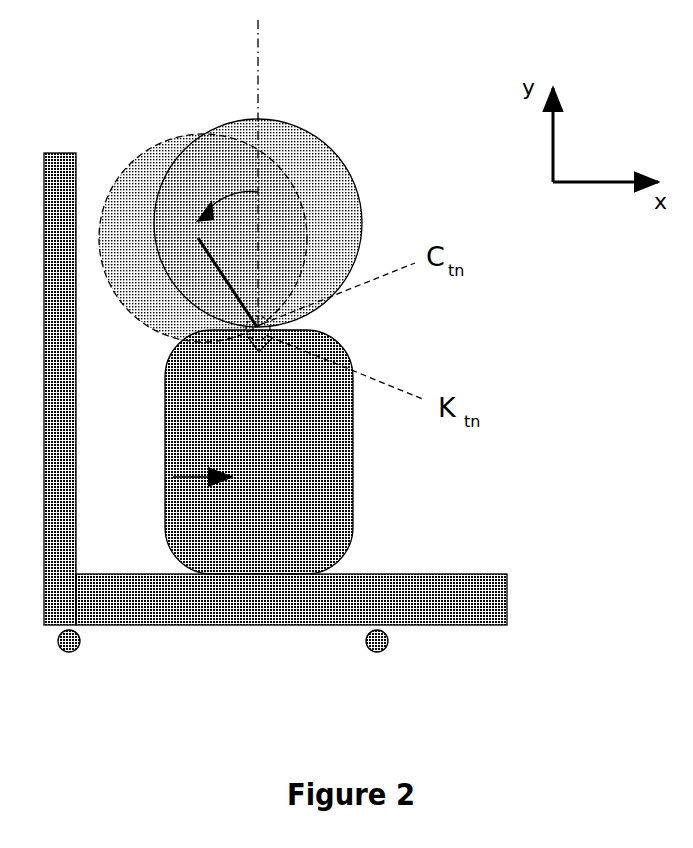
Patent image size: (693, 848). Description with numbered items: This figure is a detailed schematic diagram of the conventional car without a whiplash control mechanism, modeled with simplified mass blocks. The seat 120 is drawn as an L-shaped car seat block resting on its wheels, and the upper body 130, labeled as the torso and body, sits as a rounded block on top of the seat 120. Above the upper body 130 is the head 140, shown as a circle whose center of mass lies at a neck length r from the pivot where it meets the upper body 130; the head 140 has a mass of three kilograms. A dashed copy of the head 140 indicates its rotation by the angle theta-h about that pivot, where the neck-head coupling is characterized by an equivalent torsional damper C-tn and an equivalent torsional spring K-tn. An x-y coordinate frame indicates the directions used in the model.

The seat 120 is at (506, 597).
The upper body 130 is at (355, 501).
The head 140 is at (304, 132).